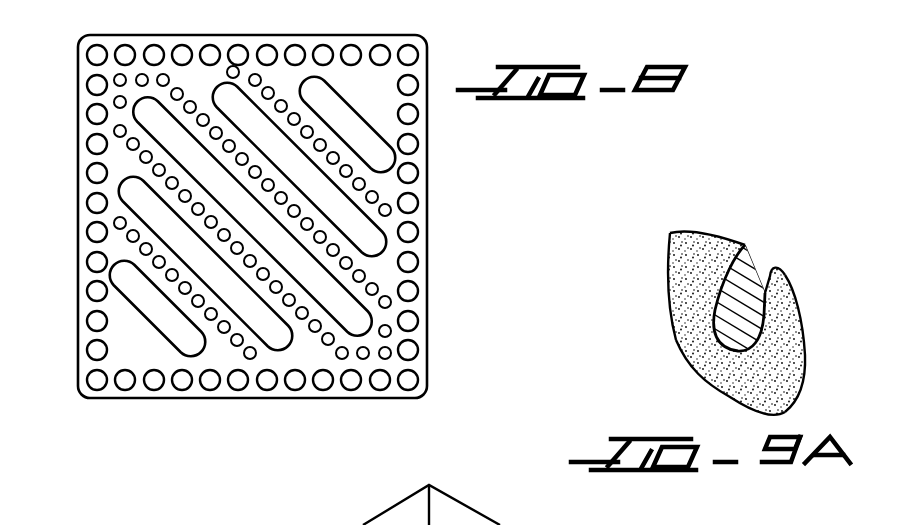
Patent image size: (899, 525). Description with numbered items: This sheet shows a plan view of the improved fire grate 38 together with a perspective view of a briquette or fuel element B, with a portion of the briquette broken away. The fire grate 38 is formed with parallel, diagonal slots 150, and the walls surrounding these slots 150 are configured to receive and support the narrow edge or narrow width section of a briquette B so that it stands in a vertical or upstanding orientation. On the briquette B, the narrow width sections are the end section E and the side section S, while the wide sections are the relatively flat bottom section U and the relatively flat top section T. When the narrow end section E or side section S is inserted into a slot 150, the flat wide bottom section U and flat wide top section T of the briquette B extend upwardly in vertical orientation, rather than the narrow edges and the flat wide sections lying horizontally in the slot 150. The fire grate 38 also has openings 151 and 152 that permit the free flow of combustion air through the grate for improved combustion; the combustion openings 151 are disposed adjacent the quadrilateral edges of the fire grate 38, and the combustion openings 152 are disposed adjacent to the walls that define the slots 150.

In FIG. 8, the fire grate 38 is at (170, 408).
In FIG. 8, the diagonal slots 150 is at (303, 142).
In FIG. 8, the combustion openings 151 is at (412, 203).
In FIG. 8, the combustion openings 152 is at (157, 169).
In FIG. 9A, the briquette B is at (660, 246).
In FIG. 9A, the side section S is at (738, 250).
In FIG. 9A, the top section T is at (780, 270).
In FIG. 9A, the end section E is at (668, 290).
In FIG. 9A, the bottom section U is at (705, 312).